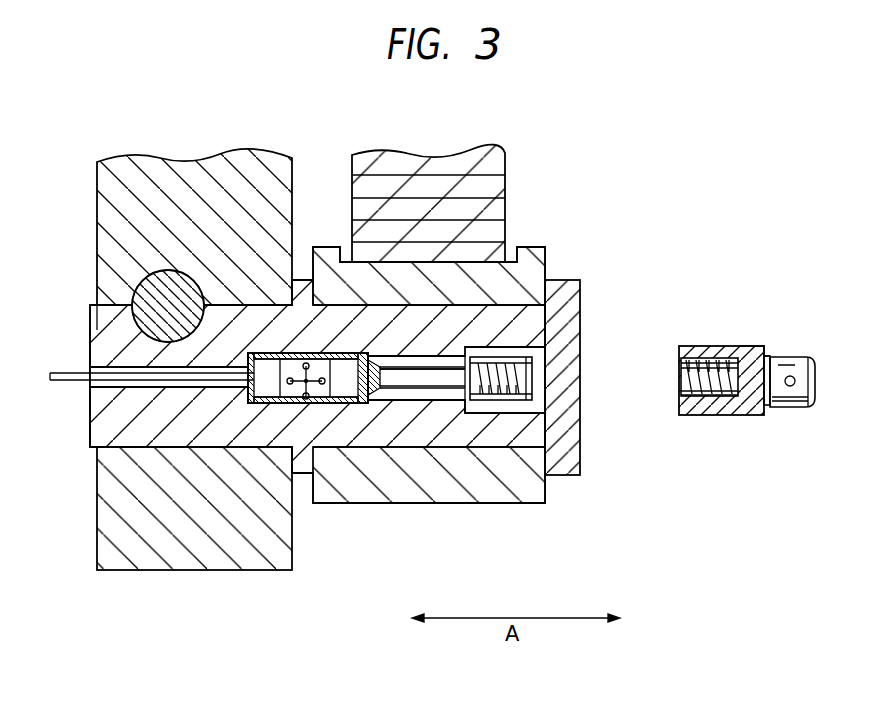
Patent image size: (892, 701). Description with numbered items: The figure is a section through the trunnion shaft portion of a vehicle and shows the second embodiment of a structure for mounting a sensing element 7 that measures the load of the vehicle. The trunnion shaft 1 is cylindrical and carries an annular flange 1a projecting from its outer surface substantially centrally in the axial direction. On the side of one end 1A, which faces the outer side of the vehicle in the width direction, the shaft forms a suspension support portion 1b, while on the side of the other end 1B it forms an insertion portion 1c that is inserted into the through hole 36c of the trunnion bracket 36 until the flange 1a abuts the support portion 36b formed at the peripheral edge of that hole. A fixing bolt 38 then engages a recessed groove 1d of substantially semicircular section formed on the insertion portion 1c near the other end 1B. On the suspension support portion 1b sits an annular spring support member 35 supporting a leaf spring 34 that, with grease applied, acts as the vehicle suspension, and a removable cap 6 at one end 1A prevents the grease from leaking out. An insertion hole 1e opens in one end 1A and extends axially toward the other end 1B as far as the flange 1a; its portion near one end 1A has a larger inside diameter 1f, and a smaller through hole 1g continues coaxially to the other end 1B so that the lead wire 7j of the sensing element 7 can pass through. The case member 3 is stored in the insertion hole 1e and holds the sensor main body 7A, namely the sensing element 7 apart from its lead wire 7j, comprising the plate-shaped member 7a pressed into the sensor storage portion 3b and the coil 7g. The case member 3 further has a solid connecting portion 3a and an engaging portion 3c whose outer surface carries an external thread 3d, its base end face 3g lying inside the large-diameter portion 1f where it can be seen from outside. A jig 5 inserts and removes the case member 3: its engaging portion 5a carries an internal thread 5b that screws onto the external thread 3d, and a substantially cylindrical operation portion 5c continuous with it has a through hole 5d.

The trunnion shaft 1 is at (413, 458).
The annular flange 1a is at (303, 477).
The suspension support portion 1b is at (545, 437).
The insertion portion 1c is at (90, 425).
The recessed groove 1d is at (112, 337).
The insertion hole 1e is at (425, 398).
The large-diameter portion 1f is at (545, 407).
The through hole 1g is at (94, 349).
The one end 1A is at (545, 320).
The other end 1B is at (90, 405).
The case member 3 is at (400, 352).
The connecting portion 3a is at (545, 346).
The sensor storage portion 3b is at (306, 350).
The engaging portion 3c is at (460, 380).
The external thread 3d is at (518, 400).
The base end face 3g is at (537, 376).
The jig 5 is at (783, 342).
The engaging portion 5a is at (735, 412).
The internal thread 5b is at (680, 378).
The operation portion 5c is at (790, 401).
The through hole 5d is at (792, 388).
The cap 6 is at (565, 280).
The sensing element 7 is at (270, 608).
The plate-shaped member 7a is at (370, 397).
The coil 7g is at (313, 400).
The lead wire 7j is at (217, 380).
The sensor main body 7A is at (257, 414).
The leaf spring 34 is at (500, 228).
The spring support member 35 is at (500, 495).
The trunnion bracket 36 is at (250, 168).
The support portion 36b is at (108, 490).
The through hole 36c is at (114, 311).
The fixing bolt 38 is at (132, 284).